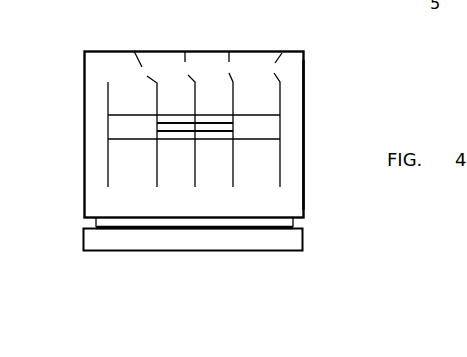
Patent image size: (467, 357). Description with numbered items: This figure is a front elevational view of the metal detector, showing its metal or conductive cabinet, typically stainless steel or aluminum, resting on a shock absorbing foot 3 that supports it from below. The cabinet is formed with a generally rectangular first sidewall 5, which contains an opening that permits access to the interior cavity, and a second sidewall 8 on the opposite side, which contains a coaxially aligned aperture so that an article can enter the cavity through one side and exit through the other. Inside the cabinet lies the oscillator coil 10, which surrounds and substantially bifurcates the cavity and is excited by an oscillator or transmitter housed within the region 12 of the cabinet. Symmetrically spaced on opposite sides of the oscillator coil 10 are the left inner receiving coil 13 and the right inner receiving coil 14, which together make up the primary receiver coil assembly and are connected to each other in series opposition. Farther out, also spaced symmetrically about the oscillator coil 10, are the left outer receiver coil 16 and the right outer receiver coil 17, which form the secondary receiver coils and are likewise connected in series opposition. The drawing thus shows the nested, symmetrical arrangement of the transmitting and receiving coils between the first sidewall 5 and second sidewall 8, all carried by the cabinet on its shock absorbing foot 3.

The first sidewall 5 is at (83, 78).
The second sidewall 8 is at (304, 80).
The region 12 is at (0, 112).
The left outer receiver coil 16 is at (108, 167).
The left inner receiving coil 13 is at (133, 40).
The oscillator coil 10 is at (202, 32).
The right inner receiving coil 14 is at (245, 36).
The right outer receiver coil 17 is at (288, 43).
The shock absorbing foot 3 is at (90, 241).